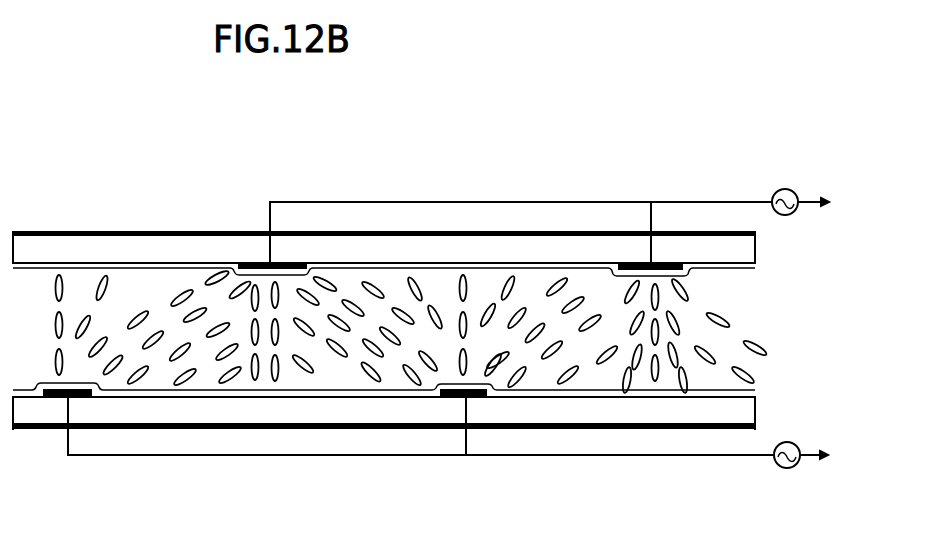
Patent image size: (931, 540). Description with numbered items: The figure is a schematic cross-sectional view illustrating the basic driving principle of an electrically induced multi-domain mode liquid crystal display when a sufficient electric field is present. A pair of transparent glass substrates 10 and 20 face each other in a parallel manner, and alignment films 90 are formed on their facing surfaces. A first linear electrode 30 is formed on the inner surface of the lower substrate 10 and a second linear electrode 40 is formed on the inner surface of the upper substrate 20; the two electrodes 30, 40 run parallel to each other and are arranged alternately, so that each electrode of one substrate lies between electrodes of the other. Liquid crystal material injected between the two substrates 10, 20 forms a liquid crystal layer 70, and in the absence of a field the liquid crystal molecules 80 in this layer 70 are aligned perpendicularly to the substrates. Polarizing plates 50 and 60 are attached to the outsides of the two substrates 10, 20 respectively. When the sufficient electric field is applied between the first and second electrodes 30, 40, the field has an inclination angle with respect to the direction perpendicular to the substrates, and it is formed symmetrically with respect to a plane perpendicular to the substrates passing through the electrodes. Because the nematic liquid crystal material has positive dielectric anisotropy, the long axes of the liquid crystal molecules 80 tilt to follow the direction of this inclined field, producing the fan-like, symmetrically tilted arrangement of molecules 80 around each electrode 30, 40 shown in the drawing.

The transparent glass substrate 10 is at (728, 413).
The transparent glass substrate 20 is at (733, 213).
The first linear electrode 30 is at (52, 398).
The second linear electrode 40 is at (253, 263).
The polarizing plate 50 is at (648, 433).
The polarizing plate 60 is at (441, 231).
The liquid crystal layer 70 is at (697, 283).
The liquid crystal molecules 80 is at (100, 272).
The alignment films 90 is at (510, 265).